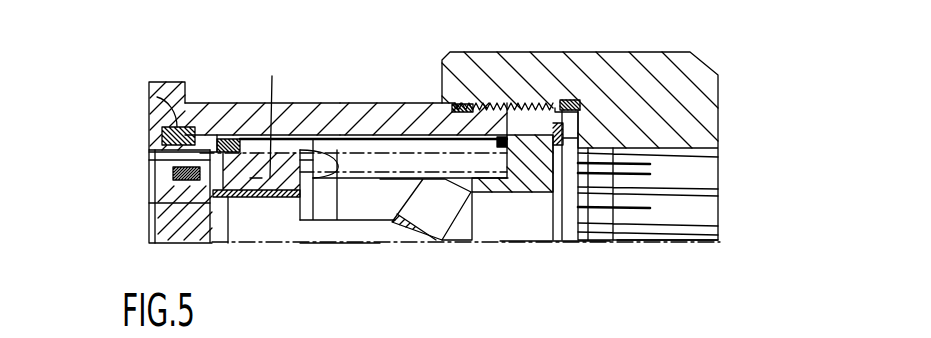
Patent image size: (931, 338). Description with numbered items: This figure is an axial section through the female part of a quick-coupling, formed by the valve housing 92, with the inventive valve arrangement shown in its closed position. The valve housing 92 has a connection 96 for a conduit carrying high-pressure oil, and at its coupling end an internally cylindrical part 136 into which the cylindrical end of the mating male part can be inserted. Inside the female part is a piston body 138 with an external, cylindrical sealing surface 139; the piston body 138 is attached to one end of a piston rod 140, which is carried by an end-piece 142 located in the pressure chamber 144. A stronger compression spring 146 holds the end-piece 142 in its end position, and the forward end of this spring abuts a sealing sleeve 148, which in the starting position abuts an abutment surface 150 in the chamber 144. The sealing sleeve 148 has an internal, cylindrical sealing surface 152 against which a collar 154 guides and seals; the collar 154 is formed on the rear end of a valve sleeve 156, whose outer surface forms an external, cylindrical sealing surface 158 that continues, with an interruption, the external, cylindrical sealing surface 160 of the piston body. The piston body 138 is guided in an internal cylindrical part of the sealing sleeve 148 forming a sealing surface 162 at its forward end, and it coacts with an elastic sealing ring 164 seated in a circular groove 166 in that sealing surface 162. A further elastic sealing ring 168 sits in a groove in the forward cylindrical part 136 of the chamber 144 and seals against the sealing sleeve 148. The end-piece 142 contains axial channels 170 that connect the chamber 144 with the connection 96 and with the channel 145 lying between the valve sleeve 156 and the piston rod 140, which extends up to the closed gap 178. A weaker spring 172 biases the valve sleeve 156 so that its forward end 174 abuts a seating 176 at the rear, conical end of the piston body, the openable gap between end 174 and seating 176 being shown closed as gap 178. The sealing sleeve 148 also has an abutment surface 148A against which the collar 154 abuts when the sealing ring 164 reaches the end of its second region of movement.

The valve housing 92 is at (559, 53).
The connection 96 is at (687, 228).
The internally cylindrical part 136 is at (160, 137).
The piston body 138 is at (200, 240).
The external cylindrical sealing surface 139 is at (165, 200).
The piston rod 140 is at (340, 232).
The end-piece 142 is at (506, 193).
The pressure chamber 144 is at (395, 204).
The channel 145 is at (277, 205).
The stronger compression spring 146 is at (424, 138).
The sealing sleeve 148 is at (172, 152).
The abutment surface 148A is at (287, 114).
The abutment surface 150 is at (190, 106).
The internal cylindrical sealing surface 152 is at (338, 104).
The collar 154 is at (305, 165).
The valve sleeve 156 is at (256, 200).
The external cylindrical sealing surface 158 is at (278, 150).
The external cylindrical sealing surface 160 is at (168, 180).
The sealing surface 162 is at (162, 236).
The elastic sealing ring 164 is at (173, 213).
The circular groove 166 is at (175, 164).
The elastic sealing ring 168 is at (172, 140).
The axial channels 170 is at (443, 240).
The weaker spring 172 is at (343, 192).
The forward end 174 is at (234, 114).
The seating 176 is at (176, 198).
The closed gap 178 is at (232, 205).